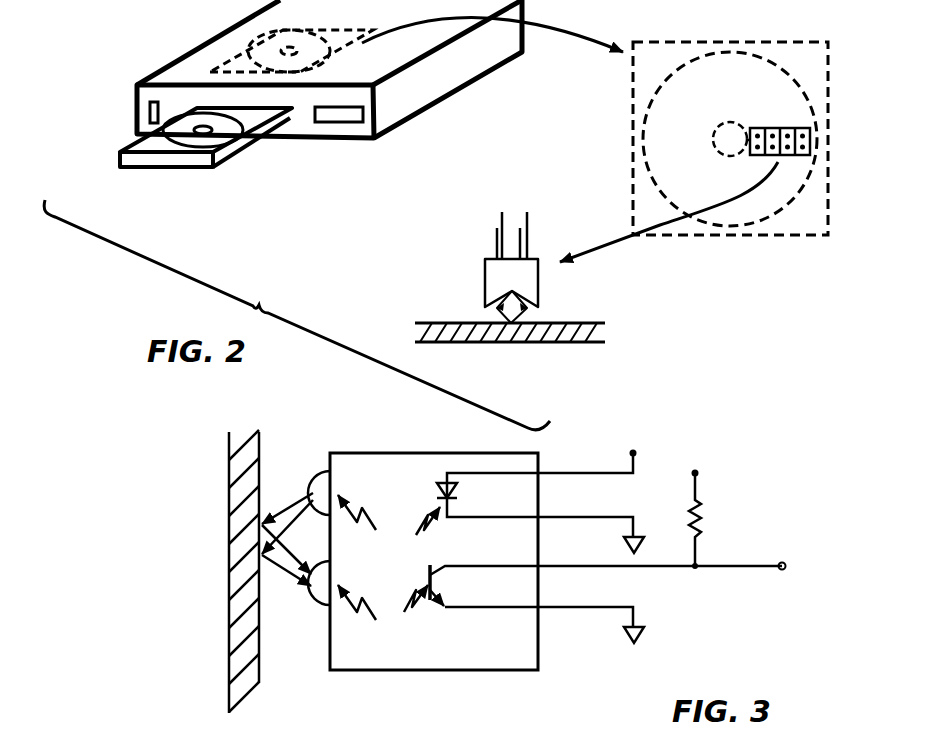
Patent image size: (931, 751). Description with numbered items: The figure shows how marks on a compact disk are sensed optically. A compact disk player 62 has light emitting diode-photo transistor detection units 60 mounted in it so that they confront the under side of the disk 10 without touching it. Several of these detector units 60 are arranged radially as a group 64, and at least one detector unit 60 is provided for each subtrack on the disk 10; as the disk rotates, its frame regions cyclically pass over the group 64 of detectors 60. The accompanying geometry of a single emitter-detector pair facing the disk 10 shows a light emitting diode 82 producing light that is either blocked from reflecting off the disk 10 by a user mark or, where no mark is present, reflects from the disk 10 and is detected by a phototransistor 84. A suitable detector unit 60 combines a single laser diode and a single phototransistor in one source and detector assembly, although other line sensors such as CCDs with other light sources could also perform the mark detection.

In FIG. 2, the disk 10 is at (500, 343).
In FIG. 3, the disk 10 is at (229, 553).
In FIG. 2, the light emitting diode-photo transistor detection unit 60 is at (485, 272).
In FIG. 3, the light emitting diode-photo transistor detection unit 60 is at (425, 453).
In FIG. 2, the compact disk player 62 is at (433, 110).
In FIG. 2, the group of detector units 64 is at (778, 130).
In FIG. 3, the light emitting diode 82 is at (455, 491).
In FIG. 3, the phototransistor 84 is at (436, 585).